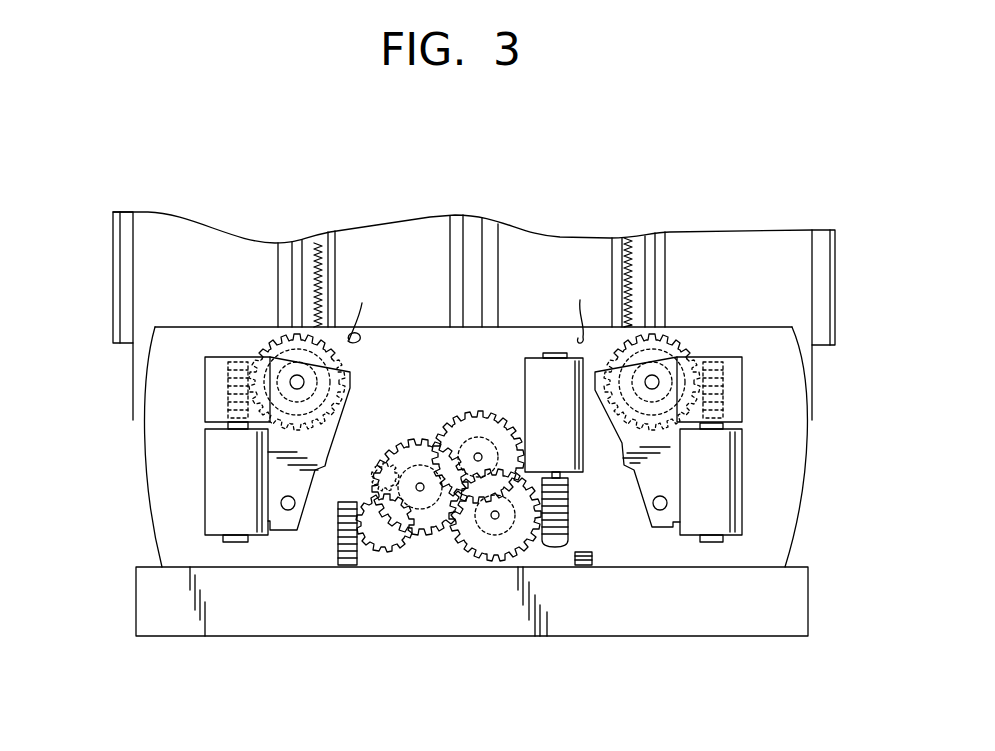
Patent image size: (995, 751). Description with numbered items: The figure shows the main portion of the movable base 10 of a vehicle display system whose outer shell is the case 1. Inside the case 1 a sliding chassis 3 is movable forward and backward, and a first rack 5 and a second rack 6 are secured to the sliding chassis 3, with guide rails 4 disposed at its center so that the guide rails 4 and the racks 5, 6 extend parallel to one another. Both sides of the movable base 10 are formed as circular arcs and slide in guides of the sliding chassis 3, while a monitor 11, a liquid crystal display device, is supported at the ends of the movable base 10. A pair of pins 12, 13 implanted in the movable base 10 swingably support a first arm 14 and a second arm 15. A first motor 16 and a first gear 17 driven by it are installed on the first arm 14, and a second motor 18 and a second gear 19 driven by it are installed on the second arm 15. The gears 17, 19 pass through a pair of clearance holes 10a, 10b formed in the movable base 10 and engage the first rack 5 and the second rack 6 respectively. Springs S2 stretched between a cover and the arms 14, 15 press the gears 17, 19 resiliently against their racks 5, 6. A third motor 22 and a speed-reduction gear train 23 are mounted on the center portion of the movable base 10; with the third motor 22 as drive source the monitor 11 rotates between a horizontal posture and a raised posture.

The case 1 is at (113, 288).
The sliding chassis 3 is at (182, 257).
The guide rails 4 is at (490, 272).
The first rack 5 is at (313, 243).
The second rack 6 is at (617, 257).
The springs S2 is at (465, 309).
The movable base 10 is at (165, 453).
The clearance hole 10a is at (260, 385).
The clearance hole 10b is at (687, 390).
The monitor 11 is at (165, 600).
The pin 12 is at (288, 510).
The pin 13 is at (660, 510).
The first arm 14 is at (313, 483).
The second arm 15 is at (638, 497).
The first motor 16 is at (223, 502).
The first gear 17 is at (340, 420).
The second motor 18 is at (720, 485).
The second gear 19 is at (687, 335).
The third motor 22 is at (537, 382).
The speed-reduction gear train 23 is at (430, 437).